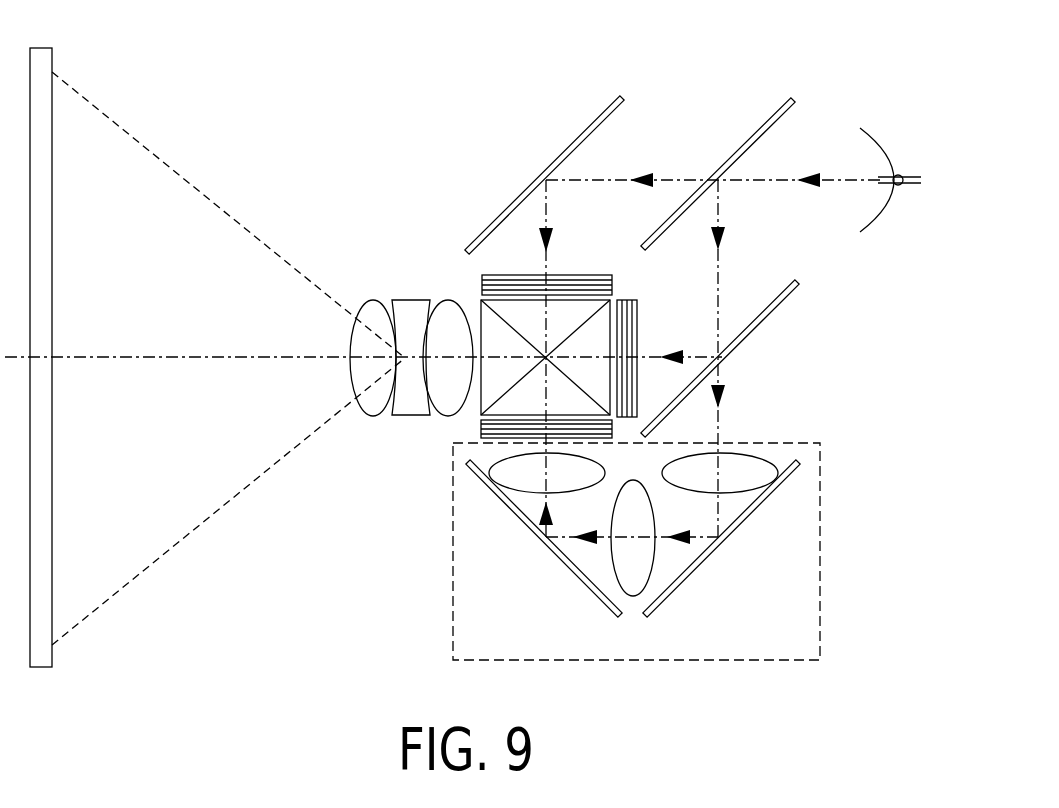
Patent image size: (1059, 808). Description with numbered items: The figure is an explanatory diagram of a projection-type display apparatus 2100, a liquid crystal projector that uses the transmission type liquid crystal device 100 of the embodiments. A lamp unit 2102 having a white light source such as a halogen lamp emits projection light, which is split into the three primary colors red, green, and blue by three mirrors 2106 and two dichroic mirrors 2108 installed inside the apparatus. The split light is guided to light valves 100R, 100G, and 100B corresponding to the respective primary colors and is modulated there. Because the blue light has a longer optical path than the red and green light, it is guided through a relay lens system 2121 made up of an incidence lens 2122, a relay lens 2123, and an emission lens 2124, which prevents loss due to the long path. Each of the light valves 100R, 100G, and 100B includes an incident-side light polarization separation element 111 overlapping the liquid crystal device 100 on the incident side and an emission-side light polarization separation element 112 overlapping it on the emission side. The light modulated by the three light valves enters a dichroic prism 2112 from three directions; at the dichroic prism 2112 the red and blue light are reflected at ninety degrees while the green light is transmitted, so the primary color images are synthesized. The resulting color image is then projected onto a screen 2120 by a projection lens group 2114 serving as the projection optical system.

The projection-type display apparatus 2100 is at (650, 58).
The lamp unit 2102 is at (898, 173).
The mirror 2106 is at (585, 130).
The dichroic mirror 2108 is at (757, 130).
The dichroic prism 2112 is at (468, 240).
The projection lens group 2114 is at (467, 286).
The screen 2120 is at (52, 657).
The relay lens system 2121 is at (820, 497).
The incidence lens 2122 is at (742, 488).
The relay lens 2123 is at (643, 572).
The emission lens 2124 is at (518, 482).
The liquid crystal device 100 is at (577, 370).
The light valve for R color 100R is at (520, 258).
The light valve for G color 100G is at (652, 323).
The light valve for B color 100B is at (453, 425).
The incident-side light polarization separation element 111 is at (566, 281).
The emission-side light polarization separation element 112 is at (612, 288).